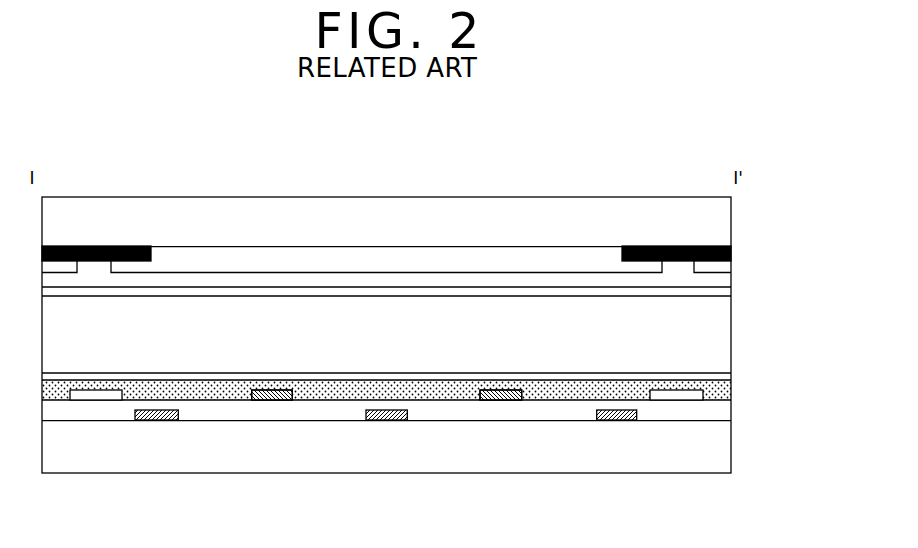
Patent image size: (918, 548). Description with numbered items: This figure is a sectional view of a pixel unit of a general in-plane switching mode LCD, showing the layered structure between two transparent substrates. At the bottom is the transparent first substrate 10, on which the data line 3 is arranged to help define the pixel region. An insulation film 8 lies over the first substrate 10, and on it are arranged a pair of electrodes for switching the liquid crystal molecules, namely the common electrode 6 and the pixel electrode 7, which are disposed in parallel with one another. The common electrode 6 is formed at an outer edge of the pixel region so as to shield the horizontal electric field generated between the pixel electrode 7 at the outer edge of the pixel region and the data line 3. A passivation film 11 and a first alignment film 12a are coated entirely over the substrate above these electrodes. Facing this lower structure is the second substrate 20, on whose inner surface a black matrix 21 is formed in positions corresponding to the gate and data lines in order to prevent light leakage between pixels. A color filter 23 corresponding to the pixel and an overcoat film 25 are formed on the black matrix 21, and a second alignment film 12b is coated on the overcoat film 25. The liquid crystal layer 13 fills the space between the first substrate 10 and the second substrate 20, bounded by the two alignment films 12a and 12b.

The second substrate 20 is at (717, 220).
The black matrix 21 is at (657, 247).
The color filter 23 is at (452, 258).
The overcoat film 25 is at (723, 277).
The second alignment film 12b is at (723, 289).
The liquid crystal layer 13 is at (717, 331).
The first alignment film 12a is at (717, 375).
The passivation film 11 is at (723, 389).
The data line 3 is at (92, 396).
The pixel electrode 7 is at (265, 400).
The insulation film 8 is at (717, 410).
The common electrode 6 is at (152, 420).
The first substrate 10 is at (717, 452).